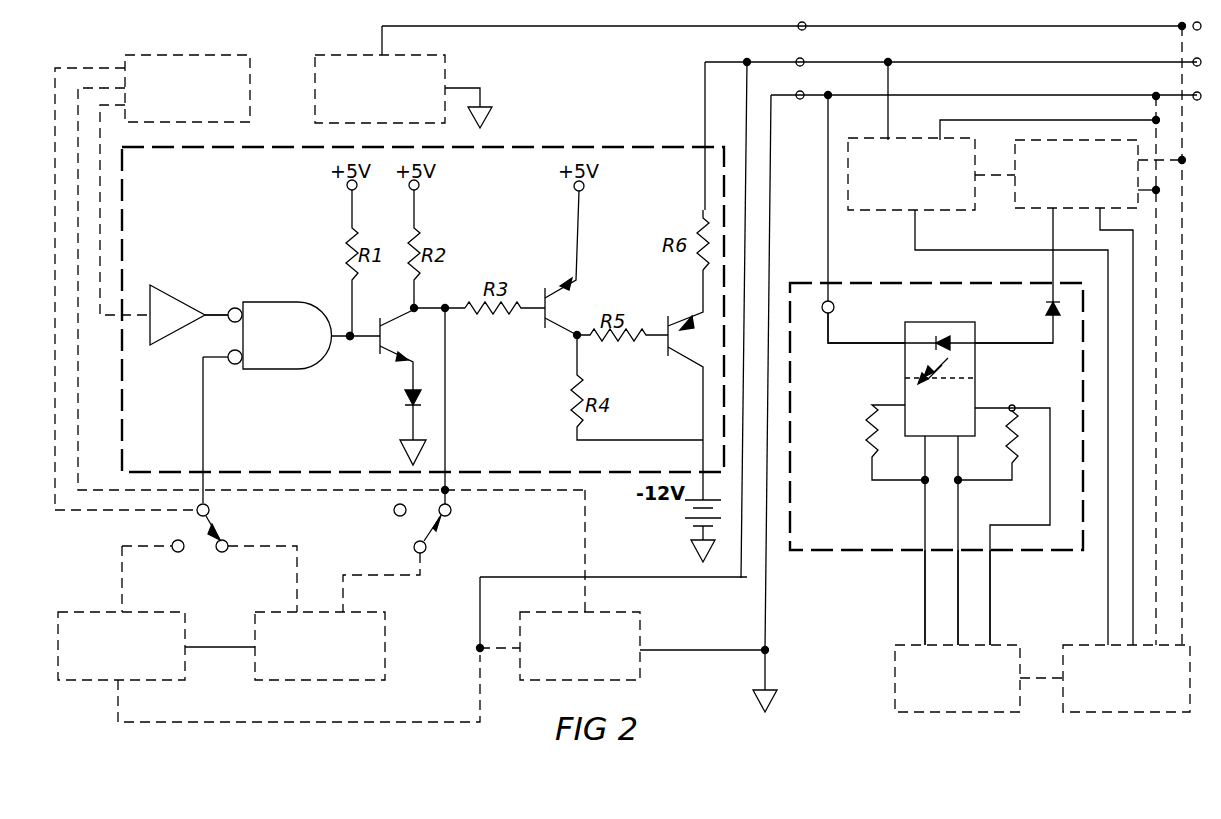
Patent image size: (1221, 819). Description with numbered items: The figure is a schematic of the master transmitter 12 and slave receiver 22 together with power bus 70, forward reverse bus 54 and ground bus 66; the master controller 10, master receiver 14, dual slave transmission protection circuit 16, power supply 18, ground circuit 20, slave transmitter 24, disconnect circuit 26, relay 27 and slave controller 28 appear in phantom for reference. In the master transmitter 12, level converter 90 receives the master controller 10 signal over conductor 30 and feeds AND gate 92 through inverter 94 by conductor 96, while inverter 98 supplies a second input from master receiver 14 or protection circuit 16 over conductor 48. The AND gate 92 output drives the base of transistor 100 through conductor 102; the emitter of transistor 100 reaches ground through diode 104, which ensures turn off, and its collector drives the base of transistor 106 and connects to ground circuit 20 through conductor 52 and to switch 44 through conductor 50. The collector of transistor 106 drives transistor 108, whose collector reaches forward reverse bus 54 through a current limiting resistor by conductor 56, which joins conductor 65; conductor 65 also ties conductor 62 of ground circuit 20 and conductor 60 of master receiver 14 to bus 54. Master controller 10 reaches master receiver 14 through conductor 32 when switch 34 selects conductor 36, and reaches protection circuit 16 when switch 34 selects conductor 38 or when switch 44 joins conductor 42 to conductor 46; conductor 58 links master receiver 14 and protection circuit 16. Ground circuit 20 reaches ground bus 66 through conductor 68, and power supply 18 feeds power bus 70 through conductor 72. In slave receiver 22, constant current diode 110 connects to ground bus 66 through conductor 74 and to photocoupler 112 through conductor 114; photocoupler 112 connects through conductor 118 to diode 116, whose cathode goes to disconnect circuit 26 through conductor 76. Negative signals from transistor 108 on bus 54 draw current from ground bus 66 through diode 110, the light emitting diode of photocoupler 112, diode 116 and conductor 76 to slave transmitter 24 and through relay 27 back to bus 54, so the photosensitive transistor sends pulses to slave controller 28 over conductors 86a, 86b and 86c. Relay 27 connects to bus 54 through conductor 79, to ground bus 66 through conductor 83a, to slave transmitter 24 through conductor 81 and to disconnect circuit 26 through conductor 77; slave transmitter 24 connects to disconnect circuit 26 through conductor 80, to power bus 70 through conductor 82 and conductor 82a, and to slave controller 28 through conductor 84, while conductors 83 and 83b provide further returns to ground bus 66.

The master controller 10 is at (160, 55).
The master transmitter 12 is at (600, 147).
The master receiver 14 is at (92, 612).
The dual slave transmission protection circuit 16 is at (370, 612).
The power supply 18 is at (352, 55).
The ground circuit 20 is at (548, 612).
The slave receiver 22 is at (845, 552).
The slave transmitter 24 is at (1085, 714).
The disconnect circuit 26 is at (1037, 210).
The relay 27 is at (880, 212).
The slave controller 28 is at (905, 714).
The conductor 30 is at (101, 133).
The conductor 32 is at (58, 512).
The switch 34 is at (211, 514).
The conductor 36 is at (172, 550).
The conductor 38 is at (226, 553).
The conductor 42 is at (345, 492).
The switch 44 is at (414, 545).
The conductor 46 is at (355, 575).
The conductor 48 is at (203, 480).
The conductor 50 is at (449, 515).
The conductor 52 is at (586, 522).
The forward reverse bus 54 is at (872, 62).
The conductor 56 is at (705, 75).
The conductor 58 is at (200, 652).
The conductor 60 is at (360, 722).
The conductor 62 is at (490, 654).
The conductor 65 is at (535, 577).
The ground bus 66 is at (870, 95).
The conductor 68 is at (771, 142).
The power bus 70 is at (872, 26).
The conductor 72 is at (538, 28).
The conductor 74 is at (828, 245).
The conductor 76 is at (1053, 265).
The conductor 77 is at (983, 172).
The conductor 79 is at (889, 92).
The conductor 80 is at (1100, 231).
The conductor 81 is at (936, 252).
The conductor 82 is at (1182, 572).
The conductor 82a is at (1160, 158).
The conductor 83 is at (1156, 551).
The conductor 83a is at (958, 120).
The conductor 83b is at (1156, 196).
The conductor 84 is at (1043, 678).
The conductor 86a is at (925, 579).
The conductor 86b is at (958, 597).
The conductor 86c is at (990, 577).
The level converter 90 is at (163, 292).
The AND gate 92 is at (270, 302).
The inverter 94 is at (232, 322).
The conductor 96 is at (238, 309).
The inverter 98 is at (236, 364).
The transistor 100 is at (384, 338).
The conductor 102 is at (350, 340).
The diode 104 is at (405, 400).
The transistor 106 is at (545, 326).
The transistor 108 is at (668, 345).
The constant current diode 110 is at (833, 305).
The photocoupler 112 is at (915, 322).
The conductor 114 is at (865, 345).
The diode 116 is at (1049, 306).
The conductor 118 is at (1005, 345).